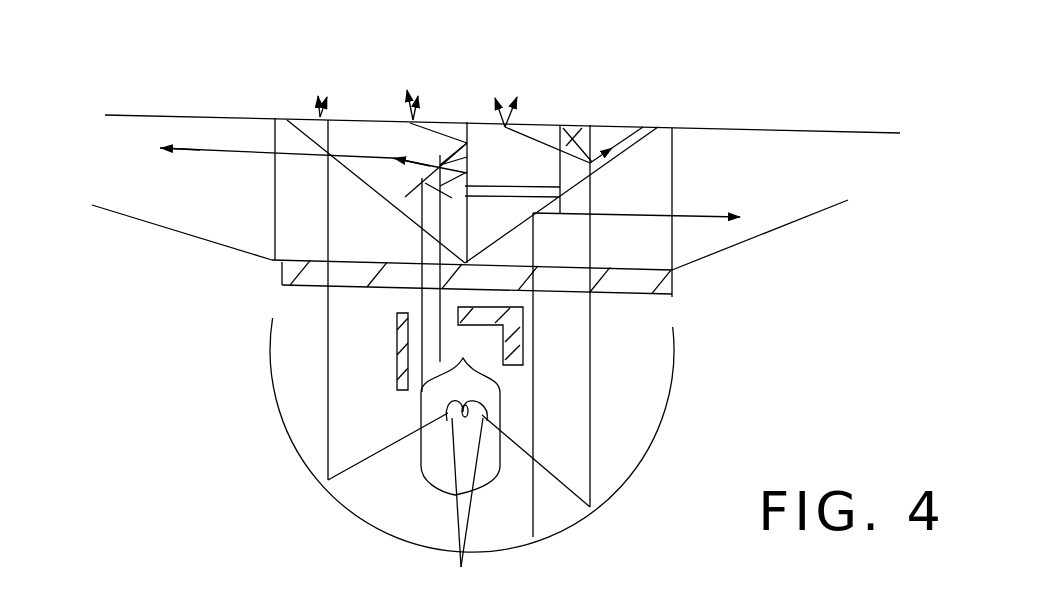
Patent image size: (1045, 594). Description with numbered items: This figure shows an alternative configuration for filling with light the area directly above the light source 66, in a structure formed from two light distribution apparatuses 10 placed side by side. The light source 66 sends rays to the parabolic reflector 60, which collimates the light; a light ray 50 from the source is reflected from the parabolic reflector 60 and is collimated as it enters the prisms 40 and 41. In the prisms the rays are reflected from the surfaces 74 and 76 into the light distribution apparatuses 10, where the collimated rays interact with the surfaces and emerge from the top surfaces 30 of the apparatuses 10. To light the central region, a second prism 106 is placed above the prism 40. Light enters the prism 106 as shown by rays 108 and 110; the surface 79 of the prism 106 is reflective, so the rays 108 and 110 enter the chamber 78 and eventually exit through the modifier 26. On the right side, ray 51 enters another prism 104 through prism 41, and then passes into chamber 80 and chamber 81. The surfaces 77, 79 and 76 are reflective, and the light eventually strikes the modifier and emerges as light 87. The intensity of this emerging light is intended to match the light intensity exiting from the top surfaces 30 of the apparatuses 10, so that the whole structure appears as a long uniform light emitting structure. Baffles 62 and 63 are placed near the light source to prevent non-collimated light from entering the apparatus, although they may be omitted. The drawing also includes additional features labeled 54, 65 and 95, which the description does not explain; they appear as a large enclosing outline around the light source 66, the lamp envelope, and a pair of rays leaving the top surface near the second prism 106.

The light distribution apparatus 10 is at (124, 100).
The modifier 26 is at (212, 115).
The top surface 30 is at (256, 113).
The prism 40 is at (290, 240).
The prism 41 is at (658, 294).
The light ray 50 is at (534, 520).
The ray 51 is at (590, 435).
The lamp housing 54 is at (318, 370).
The parabolic reflector 60 is at (602, 508).
The baffle 62 is at (398, 390).
The baffle 63 is at (524, 362).
The lamp envelope 65 is at (420, 470).
The light source 66 is at (490, 440).
The surface 74 is at (294, 119).
The surface 76 is at (639, 110).
The surface 77 is at (532, 186).
The chamber 78 is at (353, 137).
The surface 79 is at (472, 158).
The chamber 80 is at (487, 160).
The chamber 81 is at (620, 127).
The emerging light 87 is at (655, 113).
The light rays 95 is at (499, 100).
The prism 104 is at (566, 128).
The second prism 106 is at (450, 118).
The ray 108 is at (418, 288).
The ray 110 is at (400, 313).